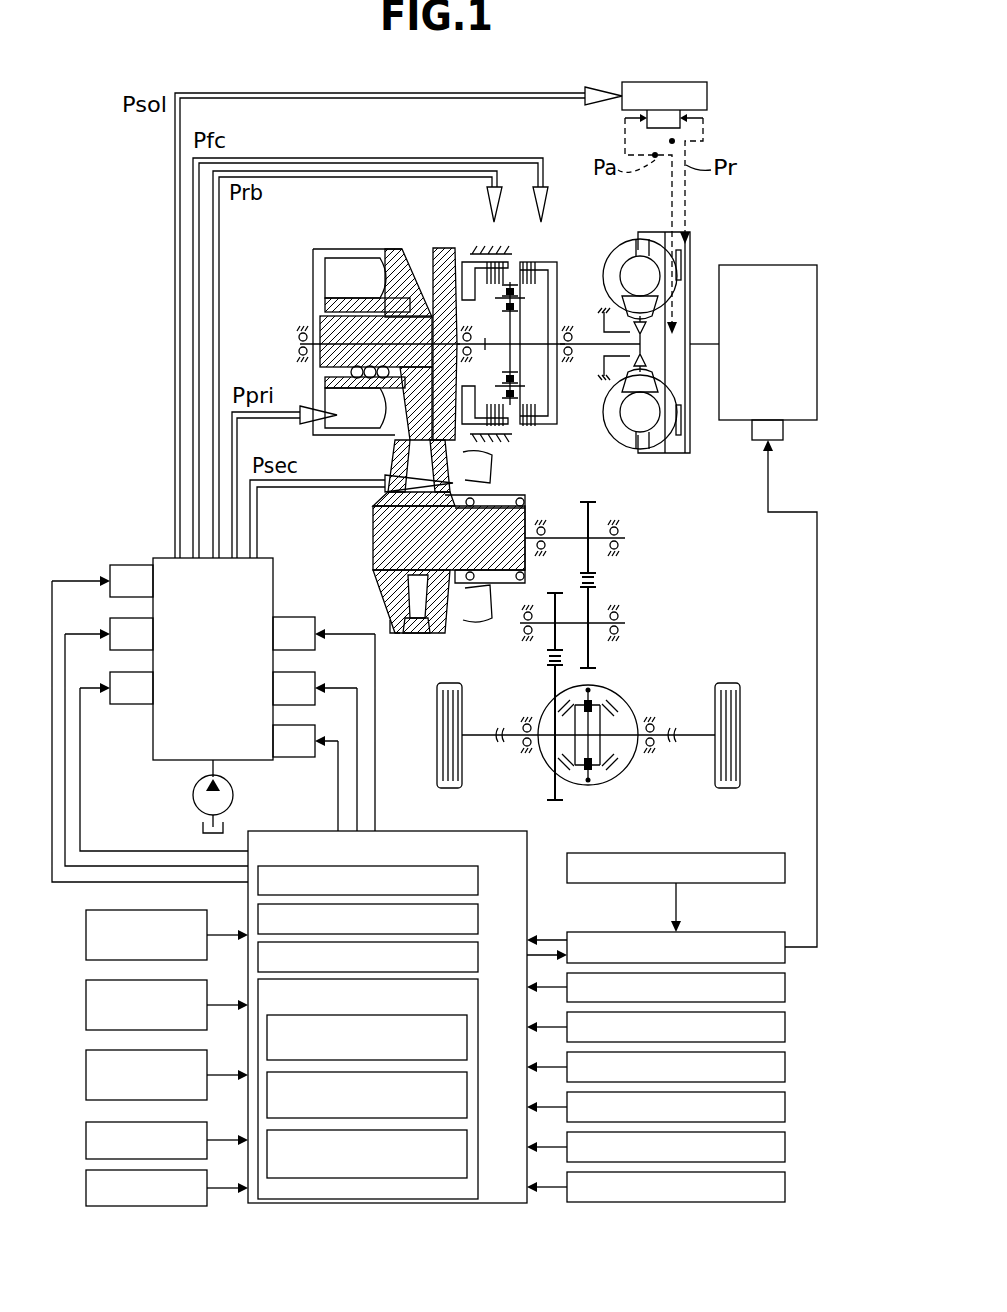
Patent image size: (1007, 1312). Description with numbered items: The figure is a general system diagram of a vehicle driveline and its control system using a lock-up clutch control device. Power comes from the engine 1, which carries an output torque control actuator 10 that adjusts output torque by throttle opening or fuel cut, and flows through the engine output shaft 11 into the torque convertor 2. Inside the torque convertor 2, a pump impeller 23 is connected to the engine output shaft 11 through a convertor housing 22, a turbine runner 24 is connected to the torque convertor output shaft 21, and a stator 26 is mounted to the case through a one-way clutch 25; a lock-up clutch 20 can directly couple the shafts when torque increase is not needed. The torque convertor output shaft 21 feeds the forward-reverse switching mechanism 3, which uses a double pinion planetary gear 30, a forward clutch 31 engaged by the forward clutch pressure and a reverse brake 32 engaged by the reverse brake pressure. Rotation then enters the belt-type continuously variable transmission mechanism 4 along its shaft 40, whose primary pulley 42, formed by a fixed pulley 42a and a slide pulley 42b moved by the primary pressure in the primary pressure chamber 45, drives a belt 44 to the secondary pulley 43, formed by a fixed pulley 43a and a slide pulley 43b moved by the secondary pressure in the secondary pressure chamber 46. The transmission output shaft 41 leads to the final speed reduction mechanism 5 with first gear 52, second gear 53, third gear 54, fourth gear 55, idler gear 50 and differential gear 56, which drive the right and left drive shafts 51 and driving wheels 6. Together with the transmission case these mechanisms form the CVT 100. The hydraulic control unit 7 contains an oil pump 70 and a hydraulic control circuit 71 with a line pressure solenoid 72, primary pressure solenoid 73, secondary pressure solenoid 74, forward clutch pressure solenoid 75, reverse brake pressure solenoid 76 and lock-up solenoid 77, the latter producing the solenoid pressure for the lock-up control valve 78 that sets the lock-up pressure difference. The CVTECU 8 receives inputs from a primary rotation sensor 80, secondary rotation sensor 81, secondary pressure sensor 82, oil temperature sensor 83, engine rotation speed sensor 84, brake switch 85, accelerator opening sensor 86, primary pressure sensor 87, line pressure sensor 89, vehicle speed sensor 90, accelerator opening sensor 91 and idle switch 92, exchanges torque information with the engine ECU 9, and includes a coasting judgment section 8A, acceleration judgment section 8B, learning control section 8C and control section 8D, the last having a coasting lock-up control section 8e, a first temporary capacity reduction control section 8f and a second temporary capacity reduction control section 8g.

The engine 1 is at (768, 265).
The torque convertor 2 is at (624, 228).
The forward-reverse switching mechanism 3 is at (499, 238).
The belt-type continuously variable transmission mechanism 4 is at (355, 250).
The final speed reduction mechanism 5 is at (650, 620).
The driving wheels 6 is at (437, 745).
The hydraulic control unit 7 is at (150, 542).
The CVT electronic control unit 8 is at (388, 831).
The coasting judgment section 8A is at (478, 883).
The acceleration judgment section 8B is at (478, 920).
The learning control section 8C is at (478, 958).
The control section 8D is at (478, 995).
The coasting lock-up control section 8e is at (467, 1037).
The first temporary capacity reduction control section 8f is at (467, 1097).
The second temporary capacity reduction control section 8g is at (467, 1157).
The engine electronic control unit 9 is at (718, 932).
The output torque control actuator 10 is at (784, 432).
The engine output shaft 11 is at (702, 350).
The lock-up clutch 20 is at (688, 295).
The torque convertor output shaft 21 is at (583, 354).
The convertor housing 22 is at (655, 232).
The pump impeller 23 is at (615, 258).
The turbine runner 24 is at (662, 450).
The one-way clutch 25 is at (625, 330).
The stator 26 is at (630, 297).
The double pinion planetary gear 30 is at (515, 426).
The forward clutch 31 is at (533, 262).
The reverse brake 32 is at (480, 250).
The primary shaft 40 is at (335, 330).
The transmission output shaft 41 is at (563, 534).
The primary pulley 42 is at (355, 329).
The fixed pulley 42a is at (445, 265).
The slide pulley 42b is at (400, 265).
The secondary pulley 43 is at (370, 594).
The fixed pulley 43a is at (393, 607).
The slide pulley 43b is at (420, 635).
The belt 44 is at (413, 473).
The primary pressure chamber 45 is at (340, 262).
The secondary pressure chamber 46 is at (470, 610).
The idler gear 50 is at (597, 628).
The drive shafts 51 is at (488, 740).
The first gear 52 is at (593, 512).
The second gear 53 is at (596, 595).
The third gear 54 is at (550, 612).
The fourth gear 55 is at (550, 684).
The differential gear 56 is at (628, 700).
The oil pump 70 is at (193, 795).
The hydraulic control circuit 71 is at (153, 752).
The line pressure solenoid 72 is at (293, 757).
The primary pressure solenoid 73 is at (296, 705).
The secondary pressure solenoid 74 is at (296, 650).
The forward clutch pressure solenoid 75 is at (128, 704).
The reverse brake pressure solenoid 76 is at (132, 650).
The lock-up solenoid 77 is at (132, 597).
The lock-up control valve 78 is at (711, 106).
The primary rotation sensor 80 is at (86, 935).
The secondary rotation sensor 81 is at (86, 1005).
The secondary pressure sensor 82 is at (86, 1075).
The oil temperature sensor 83 is at (86, 1140).
The engine rotation speed sensor 84 is at (676, 853).
The brake switch 85 is at (86, 1188).
The accelerator opening sensor 86 is at (785, 986).
The primary pressure sensor 87 is at (785, 1026).
The line pressure sensor 89 is at (785, 1066).
The vehicle speed sensor 90 is at (785, 1106).
The accelerator opening sensor 91 is at (785, 1146).
The idle switch 92 is at (785, 1186).
The belt-type continuously variable transmission 100 is at (683, 516).